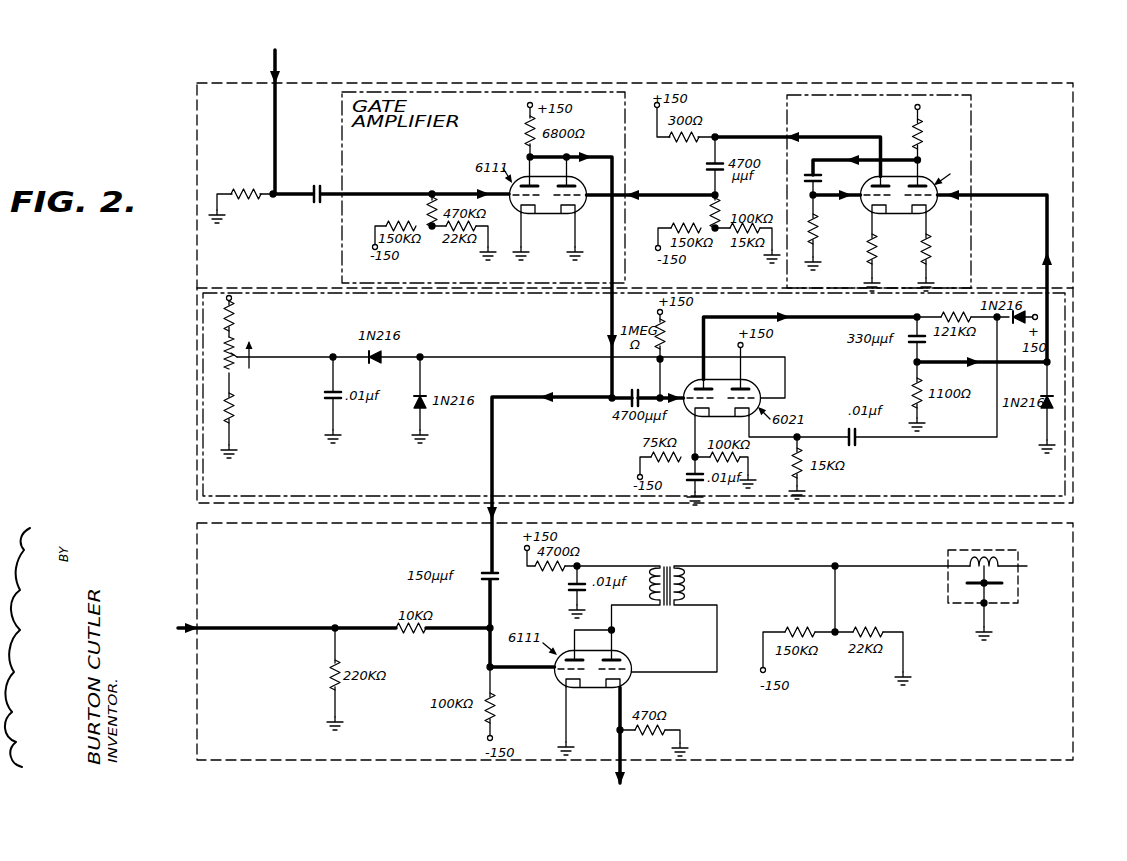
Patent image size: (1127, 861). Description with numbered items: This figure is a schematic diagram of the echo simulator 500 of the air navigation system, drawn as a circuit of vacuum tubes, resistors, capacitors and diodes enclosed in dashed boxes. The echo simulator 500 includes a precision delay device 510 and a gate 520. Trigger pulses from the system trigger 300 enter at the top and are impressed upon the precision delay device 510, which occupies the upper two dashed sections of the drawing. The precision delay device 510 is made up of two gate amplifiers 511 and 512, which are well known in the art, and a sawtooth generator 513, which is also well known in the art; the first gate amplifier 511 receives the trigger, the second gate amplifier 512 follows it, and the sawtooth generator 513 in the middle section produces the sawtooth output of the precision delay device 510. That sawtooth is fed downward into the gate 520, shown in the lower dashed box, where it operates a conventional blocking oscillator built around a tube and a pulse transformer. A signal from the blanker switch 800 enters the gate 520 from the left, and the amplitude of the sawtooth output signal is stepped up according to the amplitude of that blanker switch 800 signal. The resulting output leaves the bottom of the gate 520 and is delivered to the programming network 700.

The system trigger 300 is at (356, 113).
The echo simulator 500 is at (547, 293).
The precision delay device 510 is at (197, 365).
The gate amplifier 511 is at (337, 177).
The gate amplifier 512 is at (970, 143).
The sawtooth generator 513 is at (202, 447).
The gate 520 is at (195, 653).
The programming network 700 is at (744, 785).
The blanker switch 800 is at (252, 590).